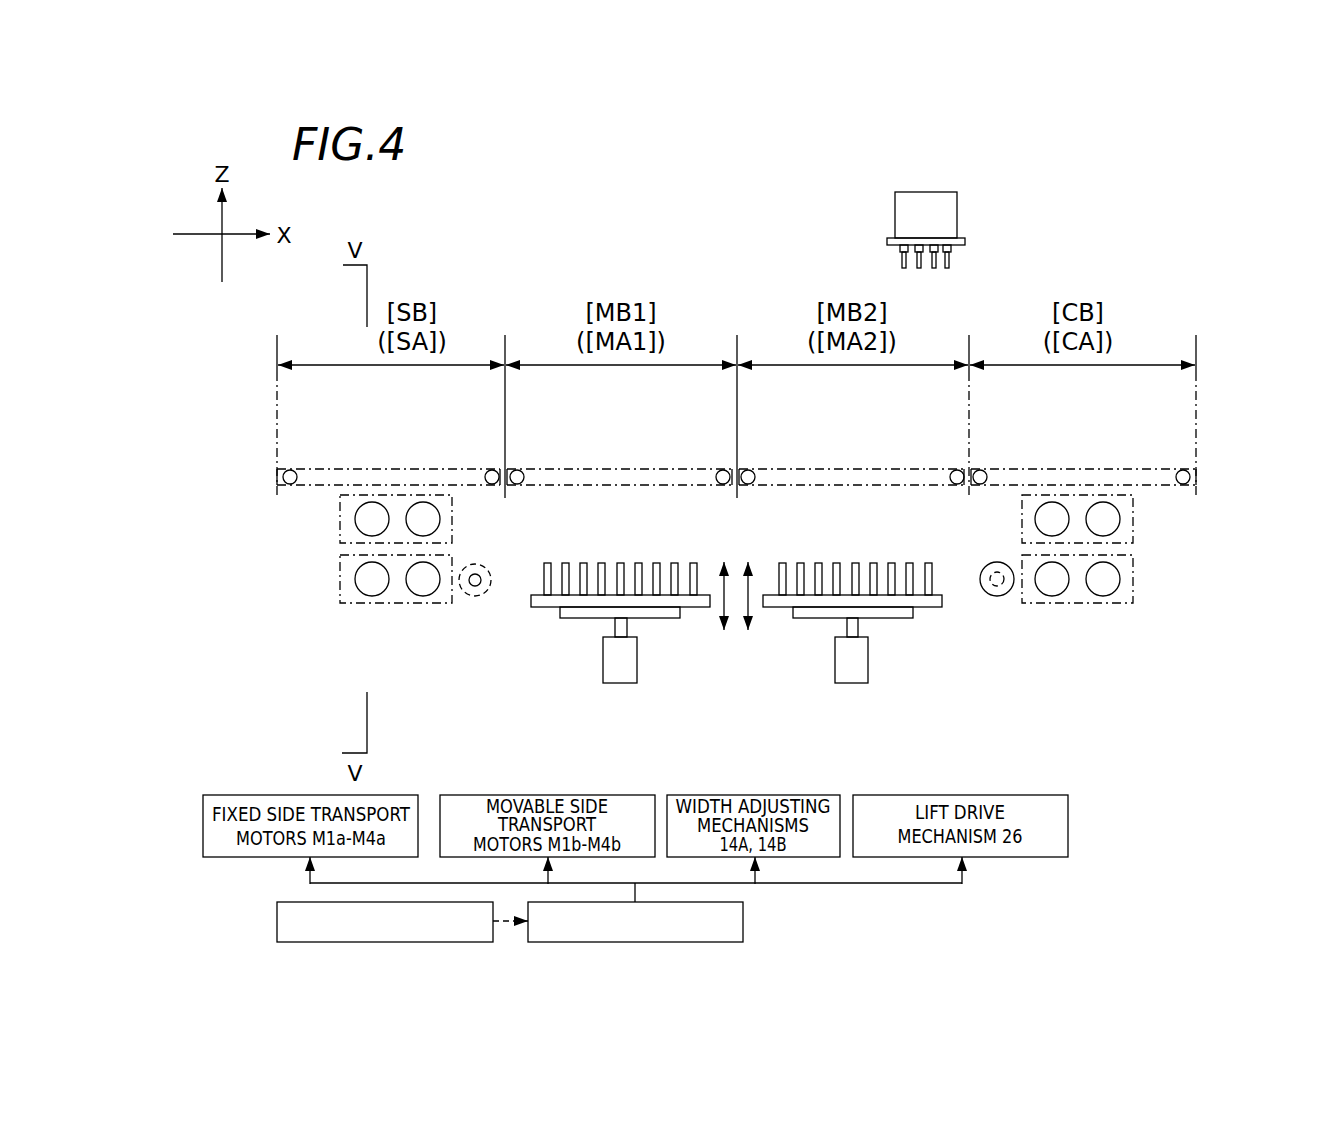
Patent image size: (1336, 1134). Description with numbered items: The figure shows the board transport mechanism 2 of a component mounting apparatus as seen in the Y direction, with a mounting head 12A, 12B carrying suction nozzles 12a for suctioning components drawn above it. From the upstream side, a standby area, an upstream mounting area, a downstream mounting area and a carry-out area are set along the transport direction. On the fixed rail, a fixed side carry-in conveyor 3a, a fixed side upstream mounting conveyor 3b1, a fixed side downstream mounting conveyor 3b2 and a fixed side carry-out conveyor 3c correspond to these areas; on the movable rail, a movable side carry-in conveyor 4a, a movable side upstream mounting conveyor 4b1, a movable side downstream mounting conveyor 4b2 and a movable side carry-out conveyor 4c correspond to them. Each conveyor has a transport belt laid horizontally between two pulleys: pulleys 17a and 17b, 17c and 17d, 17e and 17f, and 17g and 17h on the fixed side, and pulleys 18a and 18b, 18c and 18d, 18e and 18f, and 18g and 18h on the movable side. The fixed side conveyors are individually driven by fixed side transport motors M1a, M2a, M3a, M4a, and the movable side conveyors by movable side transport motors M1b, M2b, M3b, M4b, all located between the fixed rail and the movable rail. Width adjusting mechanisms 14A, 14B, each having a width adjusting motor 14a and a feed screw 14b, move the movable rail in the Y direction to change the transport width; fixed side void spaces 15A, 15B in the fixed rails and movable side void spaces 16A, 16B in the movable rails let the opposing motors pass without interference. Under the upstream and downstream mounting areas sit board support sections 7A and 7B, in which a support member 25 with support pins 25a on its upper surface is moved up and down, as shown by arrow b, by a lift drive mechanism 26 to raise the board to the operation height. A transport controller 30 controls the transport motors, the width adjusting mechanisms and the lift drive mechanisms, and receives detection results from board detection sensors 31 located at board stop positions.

The board transport mechanism 2 is at (712, 272).
The fixed side carry-in conveyor 3a is at (388, 432).
The movable side carry-in conveyor 4a is at (428, 468).
The fixed side upstream mounting conveyor 3b1 is at (619, 432).
The movable side upstream mounting conveyor 4b1 is at (648, 468).
The fixed side downstream mounting conveyor 3b2 is at (851, 432).
The movable side downstream mounting conveyor 4b2 is at (880, 468).
The fixed side carry-out conveyor 3c is at (1083, 432).
The movable side carry-out conveyor 4c is at (1113, 468).
The pulley 17a is at (316, 434).
The pulley 17b is at (468, 434).
The pulley 17c is at (542, 434).
The pulley 17d is at (698, 434).
The pulley 17e is at (774, 434).
The pulley 17f is at (932, 434).
The pulley 17g is at (1007, 434).
The pulley 17h is at (1158, 434).
The pulley 18a is at (292, 469).
The pulley 18b is at (488, 469).
The pulley 18c is at (518, 469).
The pulley 18d is at (718, 469).
The pulley 18e is at (750, 469).
The pulley 18f is at (952, 469).
The pulley 18g is at (983, 469).
The pulley 18h is at (1180, 469).
The fixed side void space 15A is at (326, 535).
The fixed side void space 15B is at (1148, 539).
The movable side void space 16A is at (330, 621).
The movable side void space 16B is at (1143, 623).
The fixed side transport motor M1a is at (372, 596).
The fixed side transport motor M2a is at (421, 596).
The fixed side transport motor M3a is at (1060, 597).
The fixed side transport motor M4a is at (1103, 597).
The movable side transport motor M1b is at (355, 520).
The movable side transport motor M2b is at (408, 528).
The movable side transport motor M3b is at (1065, 530).
The movable side transport motor M4b is at (1120, 520).
The width adjusting mechanism 14A is at (473, 652).
The width adjusting mechanism 14B is at (988, 592).
The width adjusting motor 14a is at (463, 594).
The feed screw 14b is at (482, 588).
The board support section 7A is at (743, 661).
The board support section 7B is at (853, 698).
The support member 25 is at (653, 602).
The support pin 25a is at (600, 577).
The lift drive mechanism 26 is at (607, 673).
The arrow b is at (740, 603).
The mounting head 12A is at (987, 236).
The mounting head 12B is at (987, 236).
The suction nozzle 12a is at (923, 268).
The transport controller 30 is at (635, 921).
The board detection sensor 31 is at (385, 921).